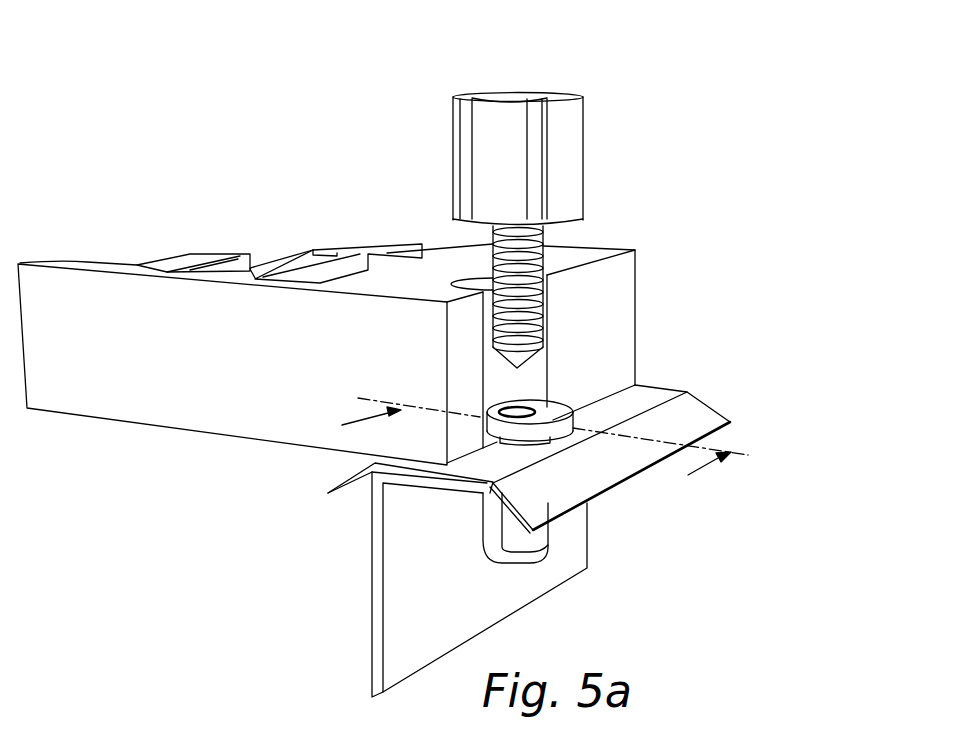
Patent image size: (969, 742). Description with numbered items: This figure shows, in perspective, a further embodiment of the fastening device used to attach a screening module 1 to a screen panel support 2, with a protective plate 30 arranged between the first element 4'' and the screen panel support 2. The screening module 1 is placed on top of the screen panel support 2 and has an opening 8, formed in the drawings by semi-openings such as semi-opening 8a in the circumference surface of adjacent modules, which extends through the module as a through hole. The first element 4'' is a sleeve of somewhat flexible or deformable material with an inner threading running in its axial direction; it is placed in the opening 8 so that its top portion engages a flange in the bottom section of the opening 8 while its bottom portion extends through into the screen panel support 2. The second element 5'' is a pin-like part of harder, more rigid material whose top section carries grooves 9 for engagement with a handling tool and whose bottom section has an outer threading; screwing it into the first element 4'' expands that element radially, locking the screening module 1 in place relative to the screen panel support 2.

The screening module 1 is at (623, 300).
The screen panel support 2 is at (568, 573).
The protective plate 30 is at (706, 418).
The first element 4'' is at (552, 395).
The second element 5'' is at (504, 193).
The opening 8 is at (470, 278).
The semi-opening 8a is at (537, 373).
The grooves 9 is at (535, 176).